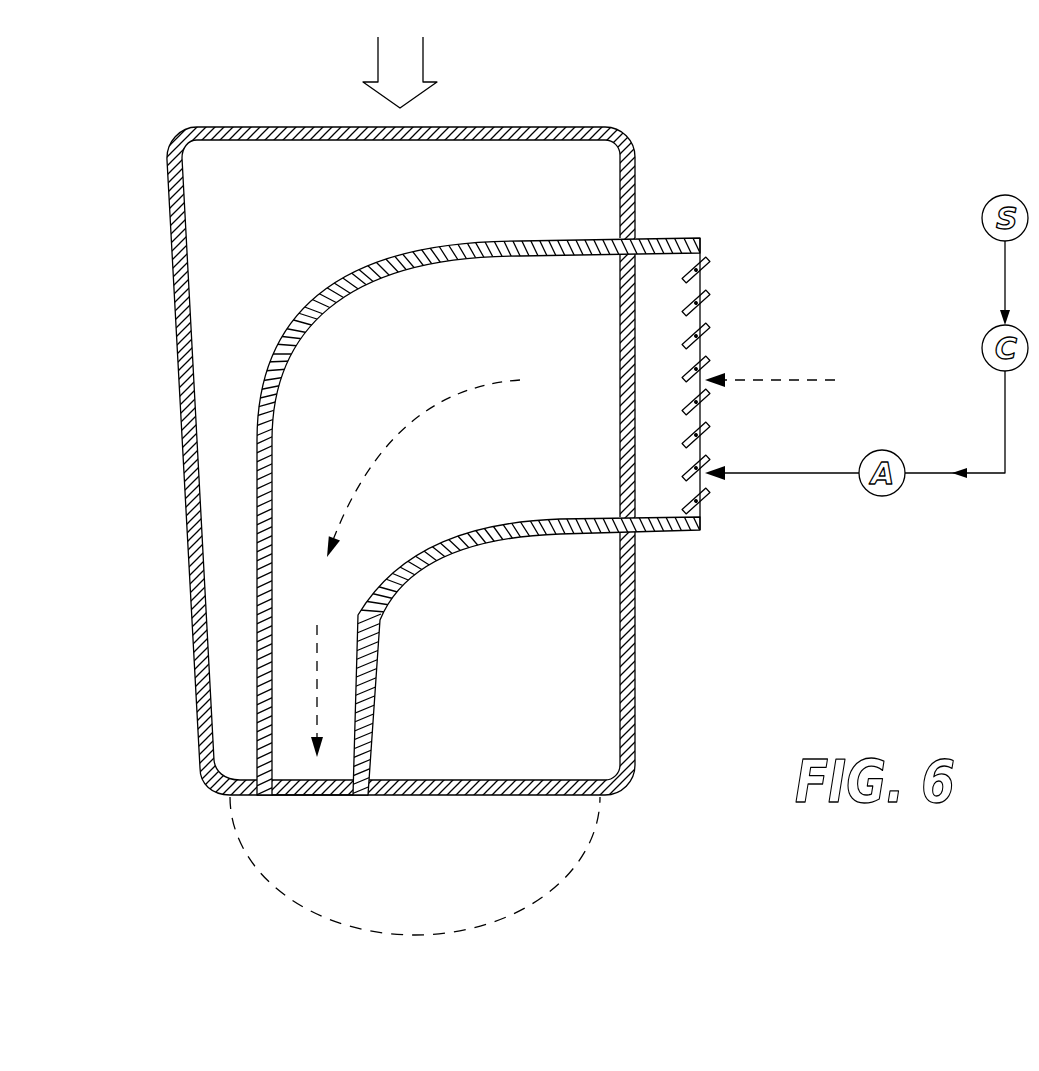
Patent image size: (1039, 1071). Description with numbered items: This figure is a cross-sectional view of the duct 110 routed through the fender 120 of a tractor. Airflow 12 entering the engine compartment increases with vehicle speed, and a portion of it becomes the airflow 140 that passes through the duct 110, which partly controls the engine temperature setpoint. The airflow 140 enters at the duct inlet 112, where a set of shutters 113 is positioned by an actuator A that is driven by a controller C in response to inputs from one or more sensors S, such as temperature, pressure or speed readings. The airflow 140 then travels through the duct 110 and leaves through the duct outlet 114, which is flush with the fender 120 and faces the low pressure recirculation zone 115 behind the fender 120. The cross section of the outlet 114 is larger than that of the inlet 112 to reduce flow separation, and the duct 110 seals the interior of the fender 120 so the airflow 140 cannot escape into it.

The airflow 12 is at (400, 72).
The duct 110 is at (290, 338).
The duct inlet 112 is at (655, 487).
The shutters 113 is at (708, 322).
The duct outlet 114 is at (318, 796).
The low pressure recirculation zone 115 is at (255, 852).
The fender 120 is at (342, 123).
The airflow 140 is at (557, 554).